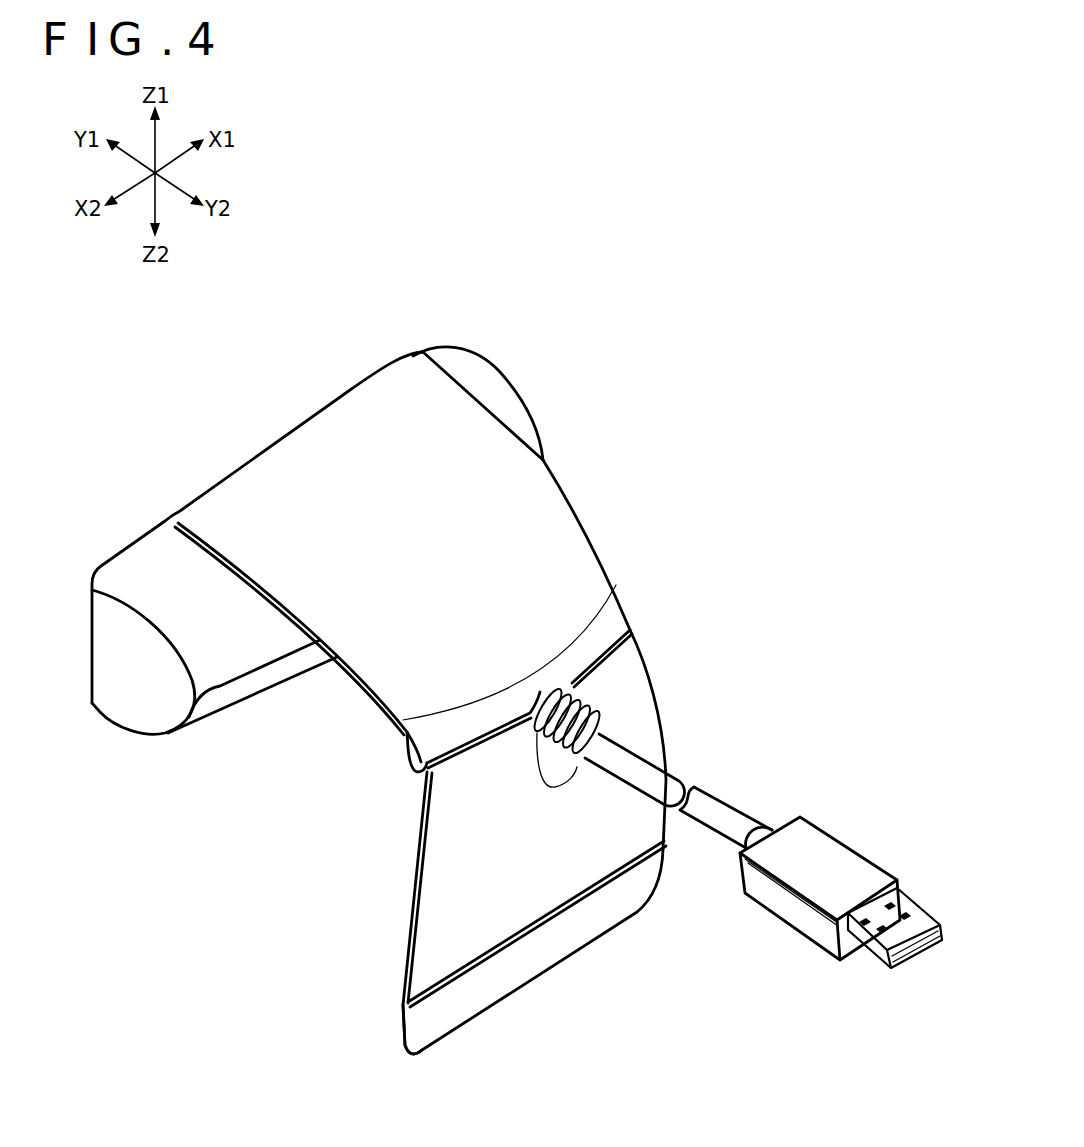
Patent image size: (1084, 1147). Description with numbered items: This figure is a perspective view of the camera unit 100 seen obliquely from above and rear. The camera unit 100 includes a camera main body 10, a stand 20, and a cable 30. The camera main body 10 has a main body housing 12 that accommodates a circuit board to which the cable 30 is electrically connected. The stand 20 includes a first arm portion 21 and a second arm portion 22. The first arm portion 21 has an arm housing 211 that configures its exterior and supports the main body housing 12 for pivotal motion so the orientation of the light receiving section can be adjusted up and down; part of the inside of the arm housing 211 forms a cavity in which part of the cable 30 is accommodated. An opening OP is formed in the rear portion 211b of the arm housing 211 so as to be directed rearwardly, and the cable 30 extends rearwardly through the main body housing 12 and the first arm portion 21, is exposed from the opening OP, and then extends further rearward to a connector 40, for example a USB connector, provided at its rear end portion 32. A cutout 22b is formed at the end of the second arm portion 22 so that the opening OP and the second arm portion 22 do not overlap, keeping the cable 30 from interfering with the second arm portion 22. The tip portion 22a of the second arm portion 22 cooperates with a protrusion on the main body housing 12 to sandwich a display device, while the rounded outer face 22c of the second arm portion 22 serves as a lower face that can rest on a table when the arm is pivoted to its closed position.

The camera unit 100 is at (624, 328).
The camera main body 10 is at (137, 516).
The main body housing 12 is at (90, 623).
The stand 20 is at (612, 537).
The first arm portion 21 is at (362, 683).
The arm housing 211 is at (565, 487).
The rear portion 211b is at (617, 622).
The opening OP is at (543, 693).
The second arm portion 22 is at (419, 855).
The tip portion 22a is at (405, 1012).
The cutout 22b is at (538, 762).
The outer face 22c is at (529, 890).
The cable 30 is at (731, 788).
The rear end portion 32 is at (835, 838).
The connector 40 is at (918, 908).